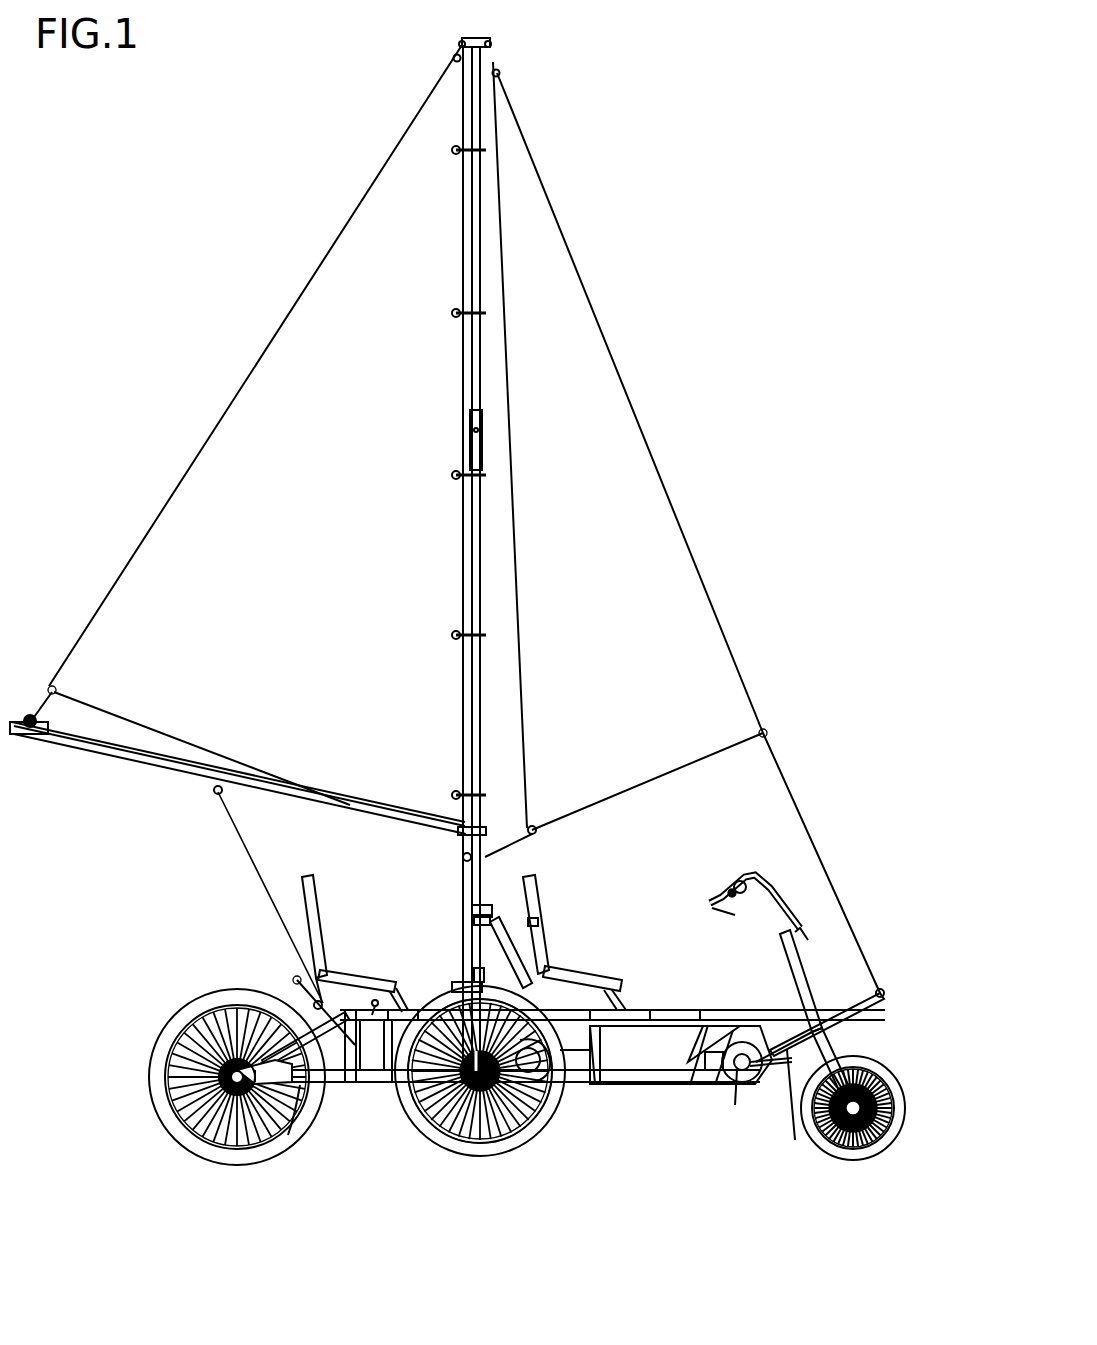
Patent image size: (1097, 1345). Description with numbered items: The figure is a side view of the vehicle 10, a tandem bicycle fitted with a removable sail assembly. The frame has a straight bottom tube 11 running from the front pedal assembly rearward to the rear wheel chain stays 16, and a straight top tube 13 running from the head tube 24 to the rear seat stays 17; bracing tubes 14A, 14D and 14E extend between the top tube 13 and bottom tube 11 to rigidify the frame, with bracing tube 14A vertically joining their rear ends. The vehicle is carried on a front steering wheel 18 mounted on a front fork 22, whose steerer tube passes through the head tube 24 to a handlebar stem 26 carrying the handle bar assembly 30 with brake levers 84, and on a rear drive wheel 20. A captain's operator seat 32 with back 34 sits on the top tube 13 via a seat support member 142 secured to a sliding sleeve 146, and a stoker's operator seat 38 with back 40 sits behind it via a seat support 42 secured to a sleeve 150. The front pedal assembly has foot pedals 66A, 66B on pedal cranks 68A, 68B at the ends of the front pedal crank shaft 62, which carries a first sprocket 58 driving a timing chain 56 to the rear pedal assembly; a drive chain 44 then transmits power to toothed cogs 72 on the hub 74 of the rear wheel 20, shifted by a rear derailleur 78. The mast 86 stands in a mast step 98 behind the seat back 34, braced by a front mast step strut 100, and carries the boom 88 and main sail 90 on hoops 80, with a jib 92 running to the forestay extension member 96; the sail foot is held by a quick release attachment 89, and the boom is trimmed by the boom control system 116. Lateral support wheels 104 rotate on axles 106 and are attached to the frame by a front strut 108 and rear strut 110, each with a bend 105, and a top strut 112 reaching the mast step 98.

The vehicle 10 is at (197, 318).
The hoops 80 is at (470, 150).
The mast 86 is at (478, 272).
The jib 92 is at (590, 420).
The main sail 90 is at (145, 575).
The quick release attachment 89 is at (32, 722).
The boom 88 is at (215, 782).
The boom control system 116 is at (235, 852).
The mast step 98 is at (485, 857).
The back 40 is at (313, 890).
The stoker's operator seat 38 is at (346, 980).
The seat support 42 is at (393, 1005).
The back 34 is at (537, 885).
The captain's operator seat 32 is at (562, 965).
The front mast step strut 100 is at (500, 932).
The top strut 112 is at (480, 907).
The sleeve 150 is at (455, 985).
The top tube 13 is at (670, 1022).
The seat support member 142 is at (628, 1013).
The sleeve 146 is at (667, 1017).
The bottom tube 11 is at (627, 1072).
The timing chain 56 is at (727, 1040).
The first sprocket 58 is at (771, 1043).
The handle bar assembly 30 is at (768, 882).
The brake levers 84 is at (770, 898).
The handlebar stem 26 is at (800, 965).
The forestay extension member 96 is at (875, 990).
The head tube 24 is at (845, 1014).
The foot pedal 66A is at (813, 1033).
The front fork 22 is at (850, 1055).
The front wheel 18 is at (870, 1150).
The pedal crank 68A is at (795, 1140).
The pedal crank 68B is at (735, 1105).
The front pedal crank shaft 62 is at (763, 1083).
The foot pedal 66B is at (715, 1085).
The bracing tube 14E is at (690, 1085).
The bracing tube 14D is at (595, 1067).
The front strut 108 is at (590, 1070).
The support wheels 104 is at (445, 1150).
The axle 106 is at (520, 1137).
The rear strut 110 is at (392, 1078).
The bend 105 is at (363, 1083).
The rear wheel chain stays 16 is at (318, 1105).
The rear seat stays 17 is at (300, 1030).
The bracing tube 14A is at (368, 1050).
The rear wheel 20 is at (160, 1072).
The toothed cogs 72 is at (228, 1085).
The hub 74 is at (247, 1092).
The rear derailleur 78 is at (232, 1128).
The drive chain 44 is at (252, 1120).